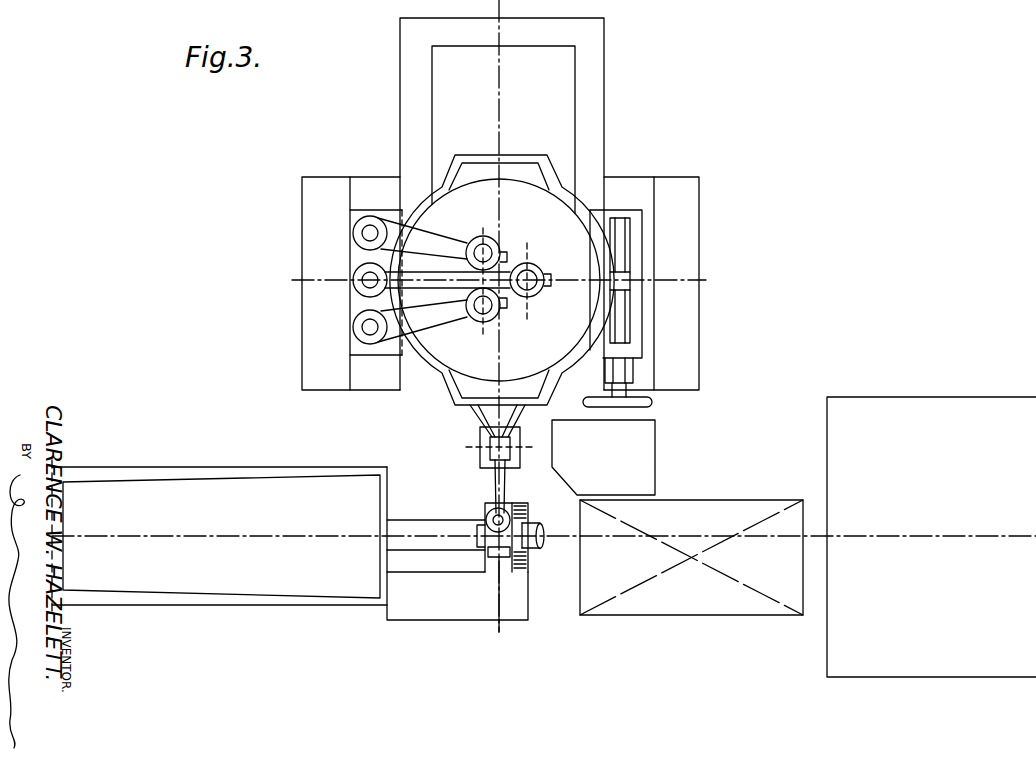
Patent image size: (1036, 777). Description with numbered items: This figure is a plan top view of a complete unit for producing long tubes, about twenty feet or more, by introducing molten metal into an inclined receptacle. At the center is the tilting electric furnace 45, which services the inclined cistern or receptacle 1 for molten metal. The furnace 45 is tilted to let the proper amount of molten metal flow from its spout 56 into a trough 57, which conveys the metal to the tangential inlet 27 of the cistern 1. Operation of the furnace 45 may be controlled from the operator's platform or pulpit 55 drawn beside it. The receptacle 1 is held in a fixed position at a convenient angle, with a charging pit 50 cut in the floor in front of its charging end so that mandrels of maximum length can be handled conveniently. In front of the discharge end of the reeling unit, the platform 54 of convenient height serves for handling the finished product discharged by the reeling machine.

The inclined cistern or receptacle 1 is at (530, 548).
The tangential inlet 27 is at (487, 514).
The electric furnace 45 is at (502, 281).
The charging pit 50 is at (56, 516).
The platform 54 is at (973, 407).
The operator's platform or pulpit 55 is at (603, 457).
The spout 56 is at (480, 411).
The trough 57 is at (480, 457).